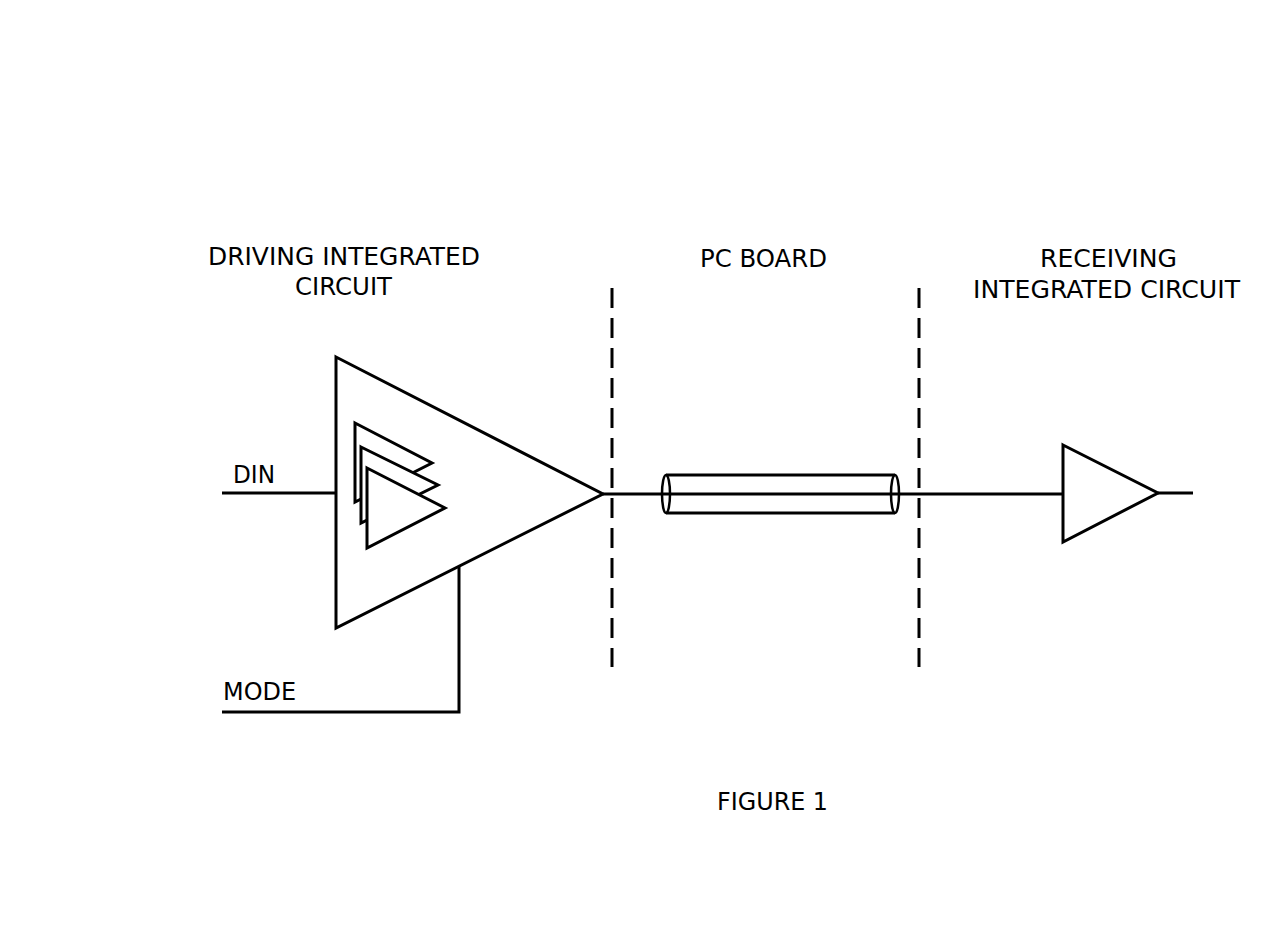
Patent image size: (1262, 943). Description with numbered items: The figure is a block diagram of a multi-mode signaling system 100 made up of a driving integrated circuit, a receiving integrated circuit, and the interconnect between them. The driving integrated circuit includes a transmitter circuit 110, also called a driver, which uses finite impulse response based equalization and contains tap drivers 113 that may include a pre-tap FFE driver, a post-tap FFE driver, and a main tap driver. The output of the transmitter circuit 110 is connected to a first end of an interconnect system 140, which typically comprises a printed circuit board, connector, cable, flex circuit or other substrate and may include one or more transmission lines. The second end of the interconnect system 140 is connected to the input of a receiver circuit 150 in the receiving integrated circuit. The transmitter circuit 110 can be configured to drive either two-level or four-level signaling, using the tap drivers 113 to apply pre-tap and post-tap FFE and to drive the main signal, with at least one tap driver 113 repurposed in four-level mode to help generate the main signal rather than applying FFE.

The signaling system 100 is at (212, 82).
The transmitter circuit 110 is at (336, 357).
The tap drivers 113 is at (410, 419).
The interconnect system 140 is at (718, 475).
The receiver circuit 150 is at (1063, 542).